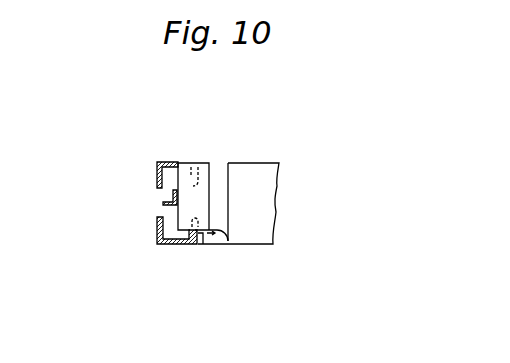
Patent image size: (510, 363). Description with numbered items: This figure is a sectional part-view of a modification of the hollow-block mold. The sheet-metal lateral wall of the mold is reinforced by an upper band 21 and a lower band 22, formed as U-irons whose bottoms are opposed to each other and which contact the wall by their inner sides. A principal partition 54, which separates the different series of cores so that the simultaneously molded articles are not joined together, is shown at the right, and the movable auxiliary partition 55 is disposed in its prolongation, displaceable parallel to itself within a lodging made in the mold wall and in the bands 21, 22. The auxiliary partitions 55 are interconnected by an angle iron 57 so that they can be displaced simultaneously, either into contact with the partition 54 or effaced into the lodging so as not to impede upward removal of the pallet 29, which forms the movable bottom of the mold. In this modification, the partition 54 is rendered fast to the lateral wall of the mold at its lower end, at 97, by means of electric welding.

The upper band 21 is at (160, 162).
The auxiliary partition 55 is at (183, 182).
The angle iron 57 is at (164, 203).
The lower band 22 is at (160, 234).
The partition 54 is at (254, 186).
The pallet 29 is at (221, 229).
The welded attachment point 97 is at (203, 233).